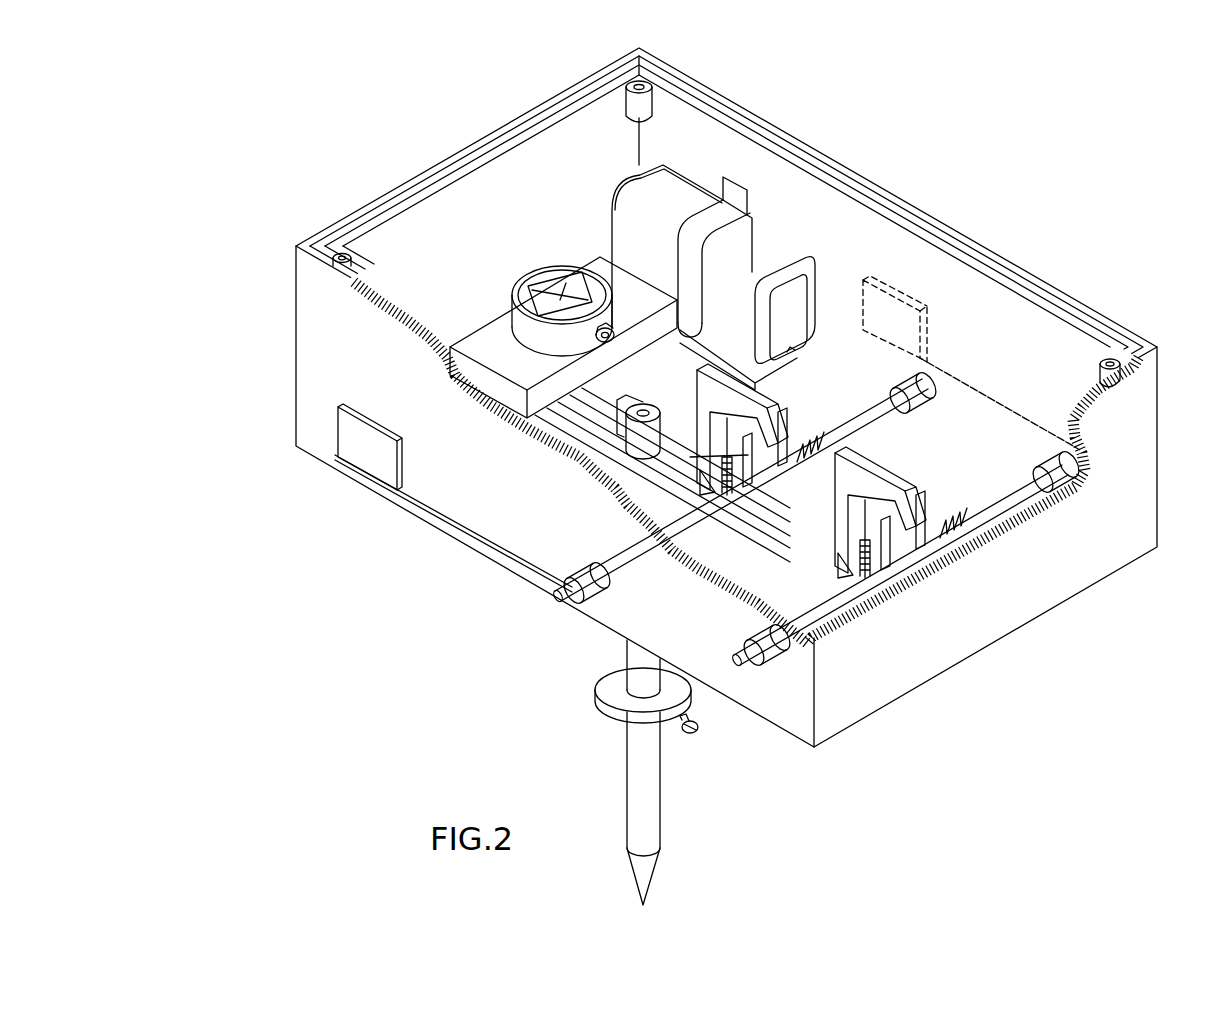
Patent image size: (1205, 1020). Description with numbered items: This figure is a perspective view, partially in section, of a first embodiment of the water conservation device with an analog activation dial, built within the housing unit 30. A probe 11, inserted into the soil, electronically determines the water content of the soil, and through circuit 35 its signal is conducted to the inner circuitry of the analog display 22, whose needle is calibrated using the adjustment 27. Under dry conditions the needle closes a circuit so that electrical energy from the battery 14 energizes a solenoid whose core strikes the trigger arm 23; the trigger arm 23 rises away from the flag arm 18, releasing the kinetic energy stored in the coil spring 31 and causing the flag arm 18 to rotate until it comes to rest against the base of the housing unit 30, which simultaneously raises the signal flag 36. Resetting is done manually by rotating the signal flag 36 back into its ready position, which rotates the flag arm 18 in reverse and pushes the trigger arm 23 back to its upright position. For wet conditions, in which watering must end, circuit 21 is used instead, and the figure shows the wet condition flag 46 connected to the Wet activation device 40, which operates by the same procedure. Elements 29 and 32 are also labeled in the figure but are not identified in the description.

The probe 11 is at (652, 843).
The battery 14 is at (668, 183).
The flag arm 18 is at (750, 457).
The circuit 21 is at (745, 553).
The analog display 22 is at (527, 282).
The trigger arm 23 is at (713, 380).
The adjustment 27 is at (608, 327).
The disc collar 29 is at (596, 703).
The housing unit 30 is at (870, 688).
The coil spring 31 is at (800, 462).
The bushing 32 is at (570, 587).
The circuit 35 is at (615, 402).
The signal flag 36 is at (363, 463).
The Wet activation device 40 is at (917, 470).
The wet condition flag 46 is at (915, 298).